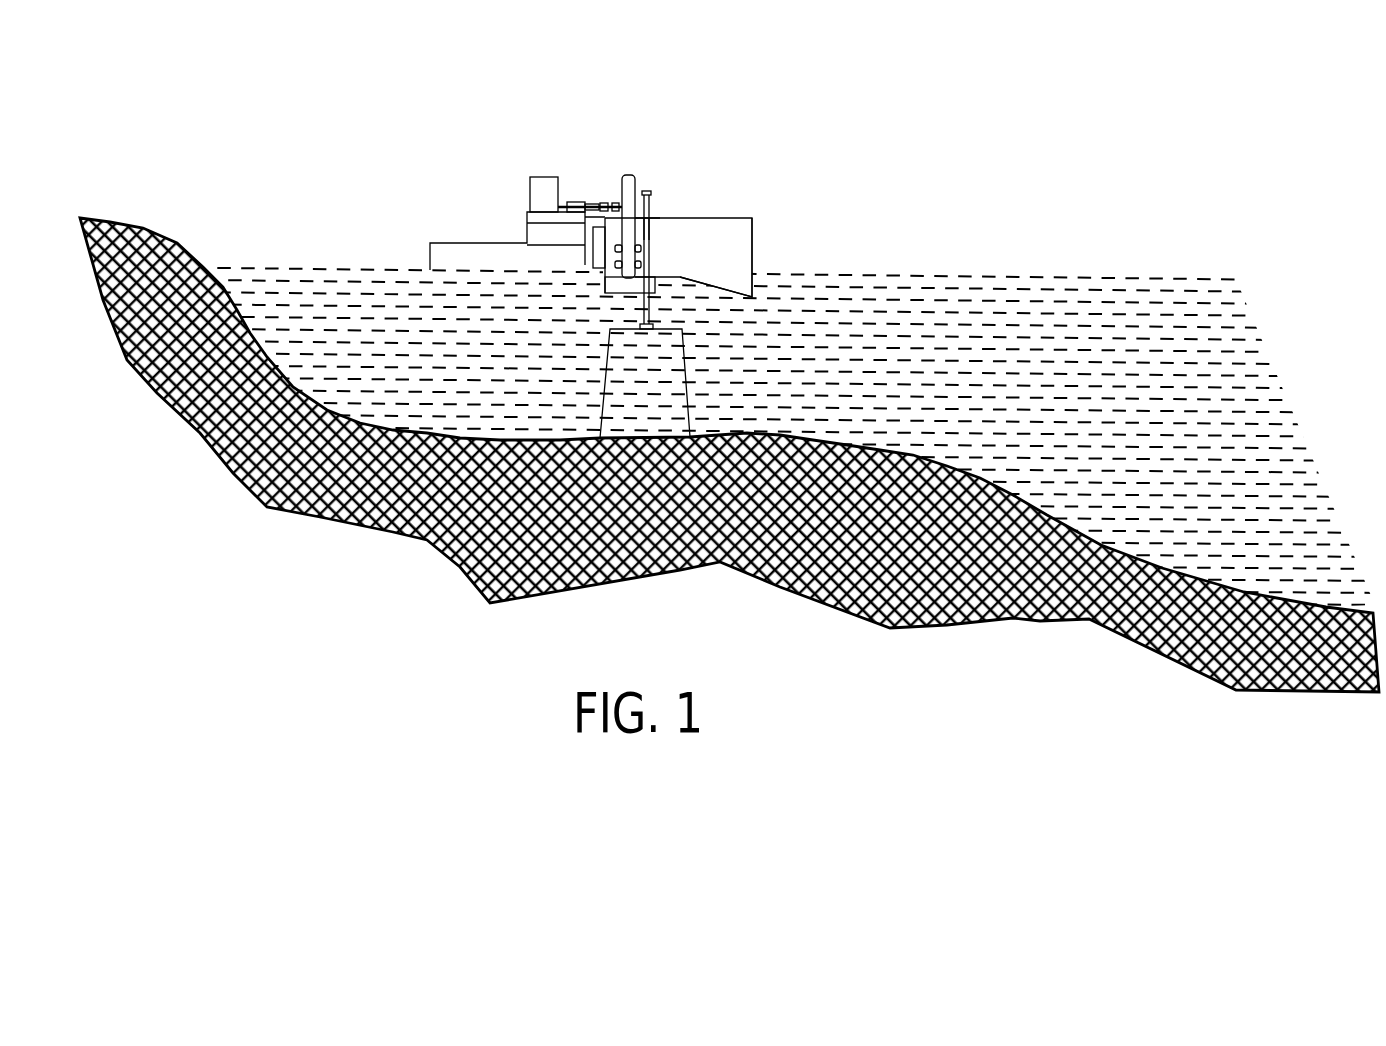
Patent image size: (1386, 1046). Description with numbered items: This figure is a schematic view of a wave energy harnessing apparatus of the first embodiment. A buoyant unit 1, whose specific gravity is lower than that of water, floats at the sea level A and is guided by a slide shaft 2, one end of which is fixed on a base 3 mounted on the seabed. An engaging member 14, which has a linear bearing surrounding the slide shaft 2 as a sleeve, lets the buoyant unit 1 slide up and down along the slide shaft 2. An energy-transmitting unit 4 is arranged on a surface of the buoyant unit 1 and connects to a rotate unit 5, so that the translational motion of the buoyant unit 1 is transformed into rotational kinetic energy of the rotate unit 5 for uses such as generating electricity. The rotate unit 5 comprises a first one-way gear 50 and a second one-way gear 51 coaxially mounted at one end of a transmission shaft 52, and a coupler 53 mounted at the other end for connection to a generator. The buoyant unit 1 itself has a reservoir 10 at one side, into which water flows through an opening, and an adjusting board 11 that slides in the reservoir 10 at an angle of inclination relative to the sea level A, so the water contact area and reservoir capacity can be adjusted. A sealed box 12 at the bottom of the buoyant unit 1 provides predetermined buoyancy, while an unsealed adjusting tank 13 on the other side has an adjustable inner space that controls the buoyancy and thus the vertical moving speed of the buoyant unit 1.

The buoyant unit 1 is at (628, 193).
The slide shaft 2 is at (650, 206).
The base 3 is at (690, 358).
The energy-transmitting unit 4 is at (630, 178).
The rotate unit 5 is at (563, 124).
The reservoir 10 is at (733, 222).
The adjusting board 11 is at (752, 278).
The sealed box 12 is at (617, 289).
The adjusting tank 13 is at (600, 248).
The engaging member 14 is at (652, 234).
The first one-way gear 50 is at (615, 153).
The second one-way gear 51 is at (614, 204).
The transmission shaft 52 is at (595, 204).
The coupler 53 is at (573, 203).
The sea level A is at (1082, 278).